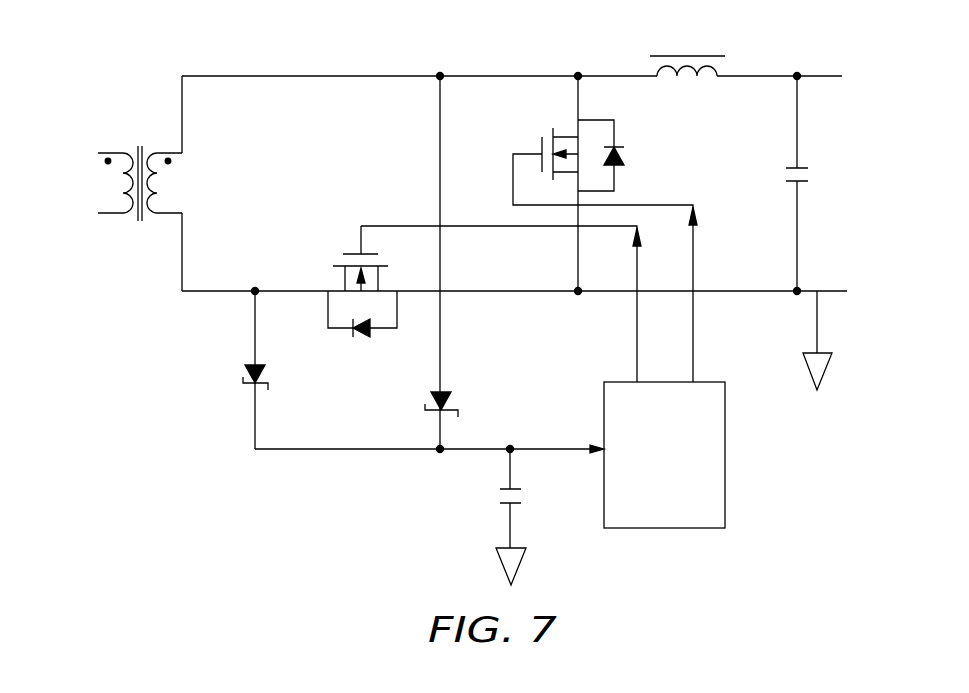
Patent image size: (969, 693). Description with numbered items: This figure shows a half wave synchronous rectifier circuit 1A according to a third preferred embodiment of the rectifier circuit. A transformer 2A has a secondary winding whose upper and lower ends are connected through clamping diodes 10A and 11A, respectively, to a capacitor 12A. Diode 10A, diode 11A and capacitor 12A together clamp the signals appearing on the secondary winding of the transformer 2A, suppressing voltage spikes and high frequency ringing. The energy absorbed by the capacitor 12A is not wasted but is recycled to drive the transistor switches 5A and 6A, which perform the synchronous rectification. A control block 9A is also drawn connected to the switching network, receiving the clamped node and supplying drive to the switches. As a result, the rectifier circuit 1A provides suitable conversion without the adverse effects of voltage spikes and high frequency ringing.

The half wave synchronous rectifier circuit 1A is at (60, 88).
The transformer 2A is at (80, 197).
The transistor switch 5A is at (530, 140).
The transistor switch 6A is at (373, 215).
The control circuit 9A is at (720, 490).
The clamping diode 10A is at (450, 388).
The clamping diode 11A is at (263, 358).
The capacitor 12A is at (490, 504).